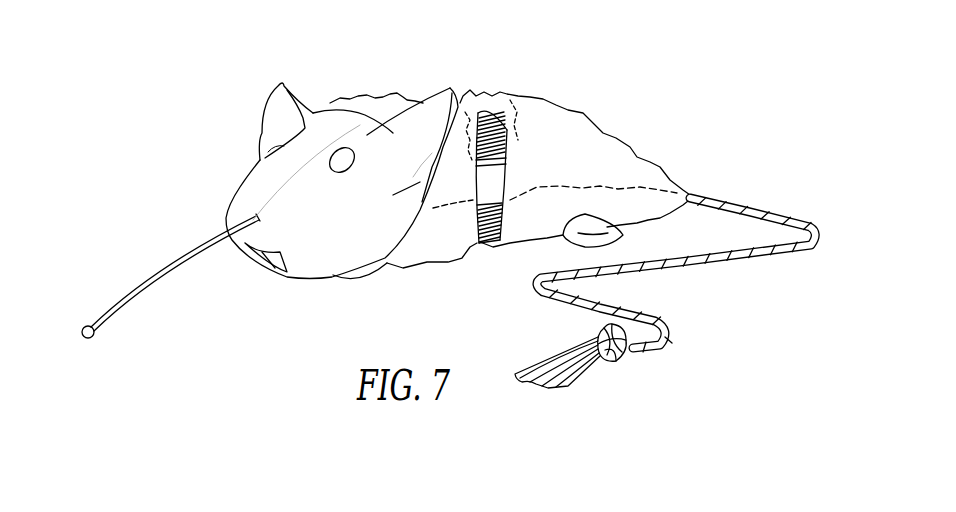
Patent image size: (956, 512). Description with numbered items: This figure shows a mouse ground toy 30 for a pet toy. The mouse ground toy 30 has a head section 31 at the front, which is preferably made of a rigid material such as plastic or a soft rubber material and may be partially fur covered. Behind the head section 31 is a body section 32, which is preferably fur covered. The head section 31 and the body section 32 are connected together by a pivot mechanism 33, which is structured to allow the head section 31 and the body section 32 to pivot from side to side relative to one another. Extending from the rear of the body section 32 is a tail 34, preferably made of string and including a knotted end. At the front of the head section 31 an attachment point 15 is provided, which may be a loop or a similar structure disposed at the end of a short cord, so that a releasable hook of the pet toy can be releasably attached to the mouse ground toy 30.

The attachment point 15 is at (87, 325).
The mouse ground toy 30 is at (486, 68).
The head section 31 is at (367, 95).
The body section 32 is at (613, 138).
The pivot mechanism 33 is at (503, 177).
The tail 34 is at (745, 255).